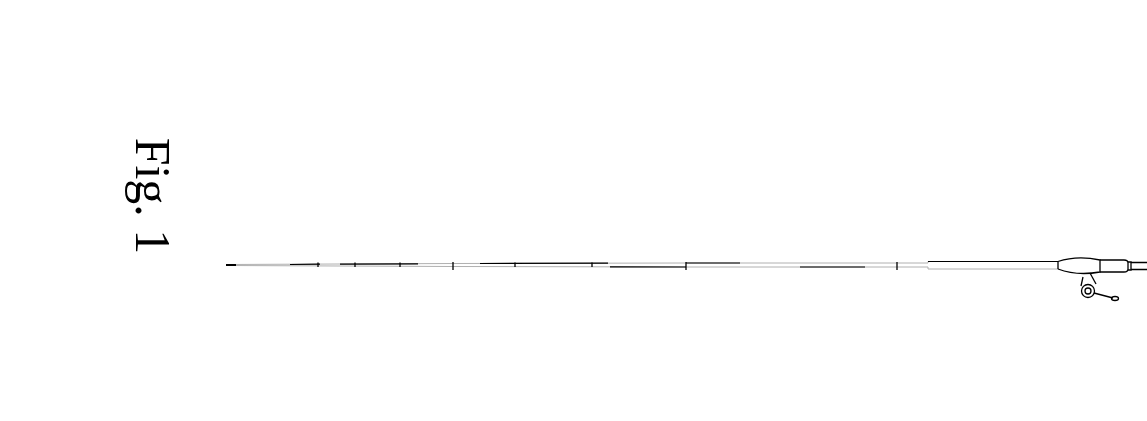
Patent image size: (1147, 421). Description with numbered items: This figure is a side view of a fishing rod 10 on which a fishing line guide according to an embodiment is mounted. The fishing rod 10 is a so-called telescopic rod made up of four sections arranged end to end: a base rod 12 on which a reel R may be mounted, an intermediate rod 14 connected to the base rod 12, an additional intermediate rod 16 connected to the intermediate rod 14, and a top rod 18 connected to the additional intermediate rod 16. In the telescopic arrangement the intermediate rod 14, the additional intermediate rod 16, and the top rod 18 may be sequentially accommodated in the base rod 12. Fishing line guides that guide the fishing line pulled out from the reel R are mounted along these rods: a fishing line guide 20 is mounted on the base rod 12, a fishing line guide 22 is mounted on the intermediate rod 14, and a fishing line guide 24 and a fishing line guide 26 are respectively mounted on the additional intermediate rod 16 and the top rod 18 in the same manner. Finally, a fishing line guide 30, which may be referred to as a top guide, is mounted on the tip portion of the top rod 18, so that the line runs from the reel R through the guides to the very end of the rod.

The fishing rod 10 is at (1013, 102).
The base rod 12 is at (899, 224).
The intermediate rod 14 is at (895, 224).
The additional intermediate rod 16 is at (686, 224).
The top rod 18 is at (453, 224).
The fishing line guide 20 is at (897, 270).
The fishing line guide 22 is at (686, 268).
The fishing line guide 24 is at (592, 267).
The fishing line guide 26 is at (318, 266).
The fishing line guide (top guide) 30 is at (228, 267).
The reel R is at (1090, 298).